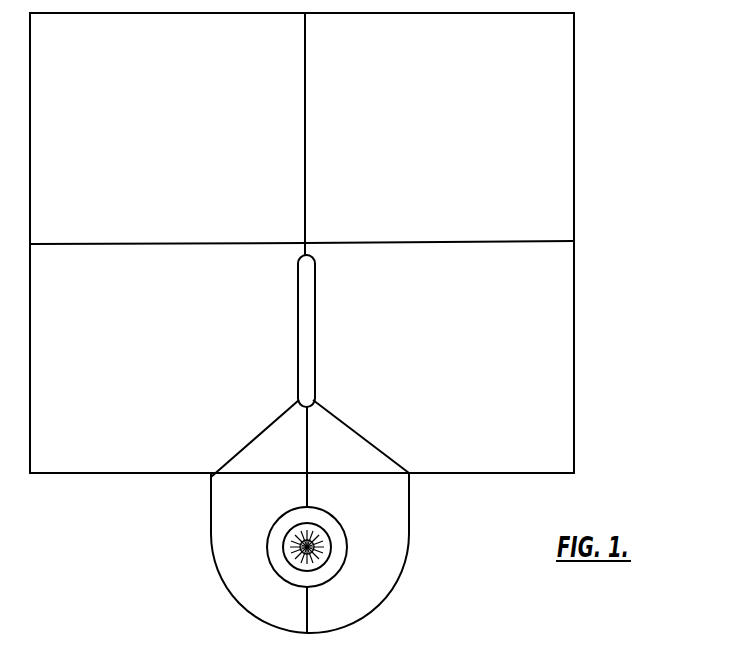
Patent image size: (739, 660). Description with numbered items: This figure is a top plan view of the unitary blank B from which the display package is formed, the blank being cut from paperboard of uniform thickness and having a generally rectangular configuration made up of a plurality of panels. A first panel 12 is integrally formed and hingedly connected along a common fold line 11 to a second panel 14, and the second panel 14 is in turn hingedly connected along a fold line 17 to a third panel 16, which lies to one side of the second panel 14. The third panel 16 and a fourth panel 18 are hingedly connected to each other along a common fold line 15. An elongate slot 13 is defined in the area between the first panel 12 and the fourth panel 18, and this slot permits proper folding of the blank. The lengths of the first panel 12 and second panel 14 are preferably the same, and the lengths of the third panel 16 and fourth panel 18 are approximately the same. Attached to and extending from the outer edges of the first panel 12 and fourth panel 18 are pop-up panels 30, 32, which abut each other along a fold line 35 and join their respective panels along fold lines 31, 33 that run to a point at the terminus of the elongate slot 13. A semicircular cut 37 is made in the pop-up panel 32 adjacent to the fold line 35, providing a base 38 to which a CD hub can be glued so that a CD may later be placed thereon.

The unitary blank B is at (608, 149).
The common fold line 11 is at (241, 243).
The first panel 12 is at (175, 372).
The elongate slot 13 is at (306, 330).
The second panel 14 is at (173, 135).
The common fold line 15 is at (477, 240).
The third panel 16 is at (461, 131).
The fold line 17 is at (305, 128).
The fourth panel 18 is at (463, 371).
The pop-up panel 30 is at (247, 509).
The fold line 31 is at (250, 440).
The pop-up panel 32 is at (393, 509).
The fold line 33 is at (368, 440).
The fold line 35 is at (308, 445).
The semicircular cut 37 is at (347, 563).
The base 38 is at (273, 548).